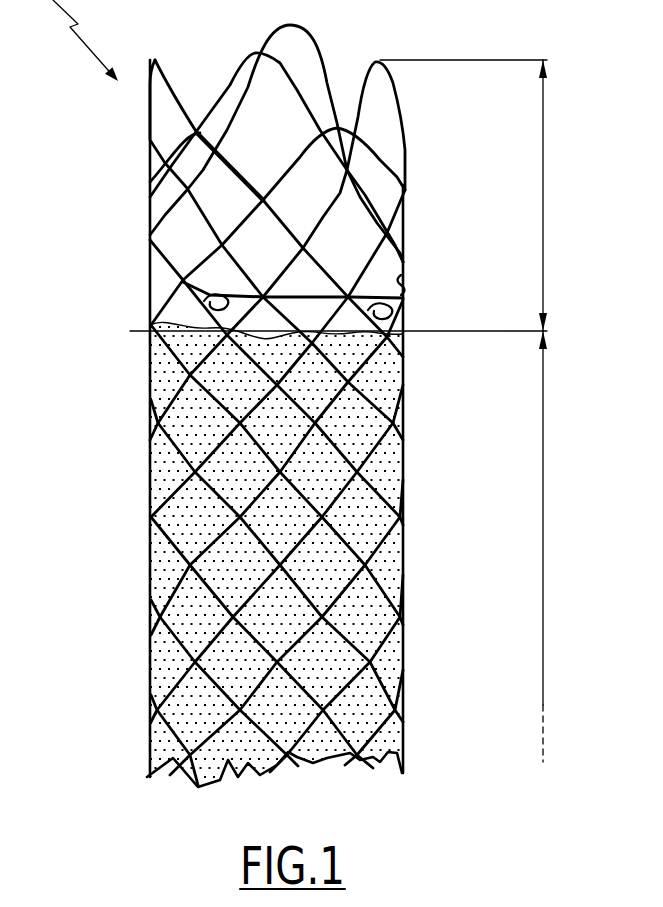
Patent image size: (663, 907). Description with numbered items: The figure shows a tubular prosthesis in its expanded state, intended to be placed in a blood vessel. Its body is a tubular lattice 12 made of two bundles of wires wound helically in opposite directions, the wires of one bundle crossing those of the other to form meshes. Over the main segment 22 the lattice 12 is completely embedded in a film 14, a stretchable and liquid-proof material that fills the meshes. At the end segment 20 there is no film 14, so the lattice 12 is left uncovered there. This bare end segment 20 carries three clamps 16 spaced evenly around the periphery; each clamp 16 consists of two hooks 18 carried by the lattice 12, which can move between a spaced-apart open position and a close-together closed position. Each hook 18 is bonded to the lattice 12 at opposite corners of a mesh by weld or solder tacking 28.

The tubular lattice 12 is at (168, 137).
The film 14 is at (170, 378).
The clamps 16 is at (198, 313).
The hooks 18 is at (185, 290).
The end segment 20 is at (356, 195).
The main segment 22 is at (562, 546).
The weld or solder tacking 28 is at (183, 280).